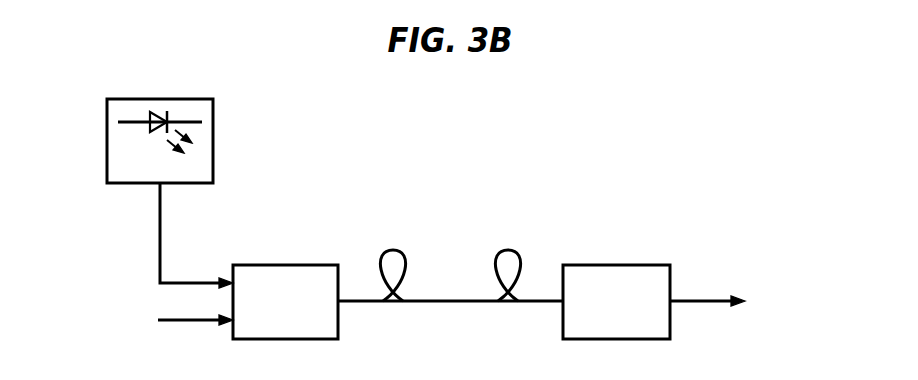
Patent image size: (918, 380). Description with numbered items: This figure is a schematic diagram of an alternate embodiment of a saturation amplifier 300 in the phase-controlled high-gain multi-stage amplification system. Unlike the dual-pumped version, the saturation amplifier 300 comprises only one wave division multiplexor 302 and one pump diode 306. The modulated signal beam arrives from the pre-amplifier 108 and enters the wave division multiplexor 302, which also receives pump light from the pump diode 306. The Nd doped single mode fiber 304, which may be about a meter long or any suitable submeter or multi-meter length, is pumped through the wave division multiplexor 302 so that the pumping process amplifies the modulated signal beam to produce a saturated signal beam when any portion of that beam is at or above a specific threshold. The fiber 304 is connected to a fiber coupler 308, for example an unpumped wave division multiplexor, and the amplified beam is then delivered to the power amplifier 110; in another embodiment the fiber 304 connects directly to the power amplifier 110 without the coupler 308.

The saturation amplifier 300 is at (195, 44).
The wave division multiplexor 302 is at (302, 265).
The Nd doped single mode fiber 304 is at (412, 258).
The pump diode 306 is at (213, 116).
The fiber coupler 308 is at (603, 265).
The pre-amplifier 108 is at (128, 333).
The power amplifier 110 is at (774, 315).